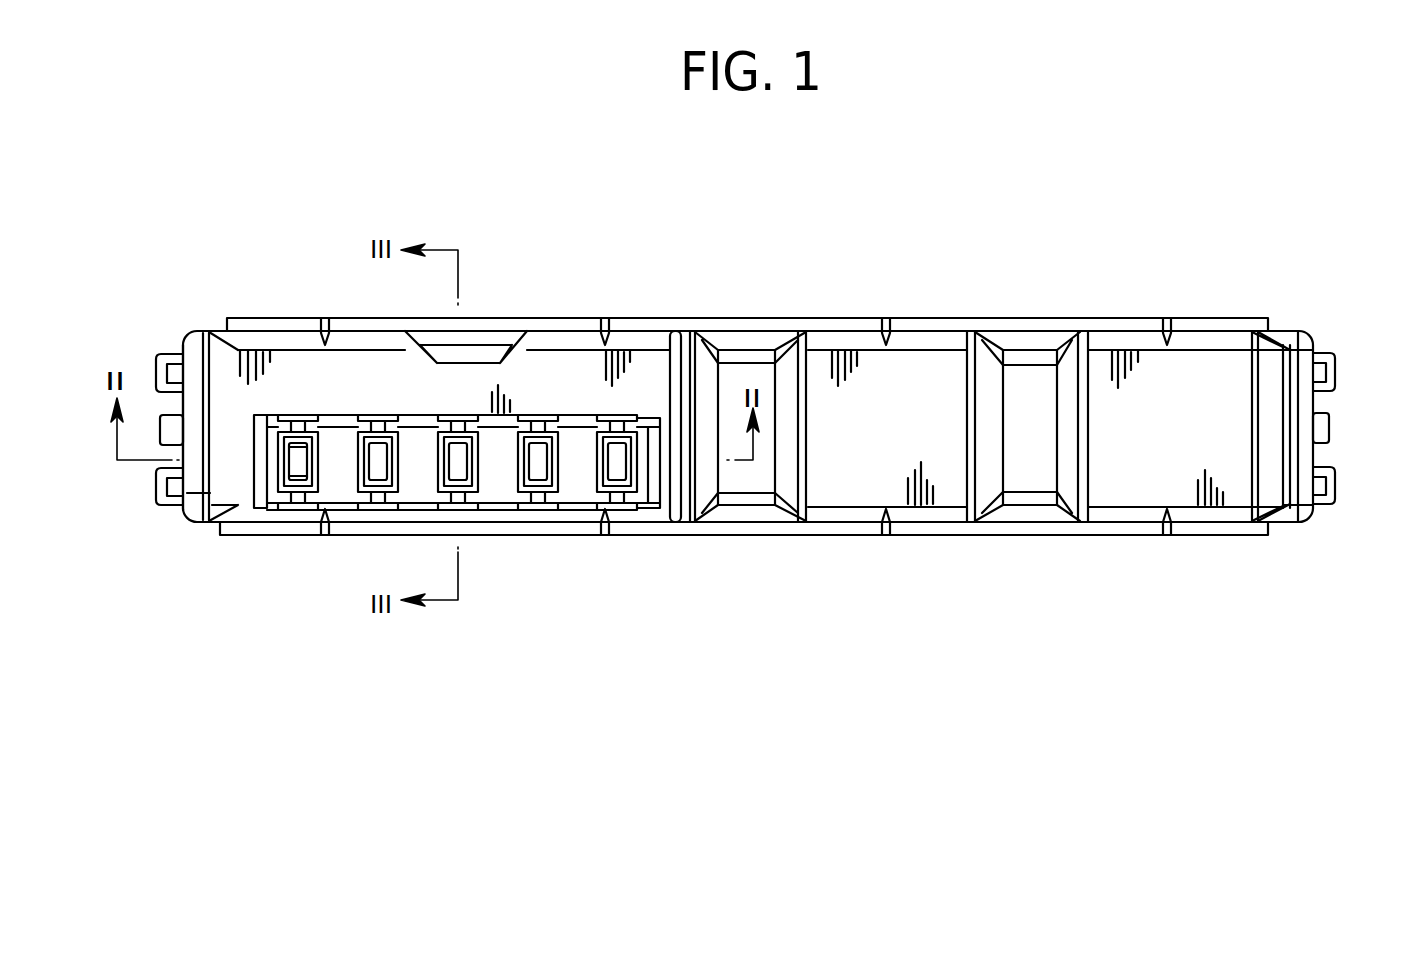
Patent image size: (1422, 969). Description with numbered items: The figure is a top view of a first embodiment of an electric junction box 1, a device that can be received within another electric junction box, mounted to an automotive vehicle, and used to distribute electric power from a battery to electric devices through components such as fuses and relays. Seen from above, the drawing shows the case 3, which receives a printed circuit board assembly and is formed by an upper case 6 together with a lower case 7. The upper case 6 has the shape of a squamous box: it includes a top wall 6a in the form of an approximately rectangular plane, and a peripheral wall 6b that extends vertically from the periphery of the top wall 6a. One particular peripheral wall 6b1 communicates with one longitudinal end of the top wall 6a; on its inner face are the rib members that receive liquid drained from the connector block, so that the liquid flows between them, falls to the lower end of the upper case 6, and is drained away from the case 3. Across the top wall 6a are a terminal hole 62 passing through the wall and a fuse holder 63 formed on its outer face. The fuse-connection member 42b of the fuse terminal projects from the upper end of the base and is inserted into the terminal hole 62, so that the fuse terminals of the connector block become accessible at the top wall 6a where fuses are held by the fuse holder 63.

The electric junction box 1 is at (1016, 260).
The case 3 is at (1218, 637).
The upper case 6 is at (1282, 531).
The top wall 6a is at (918, 507).
The peripheral wall 6b is at (925, 330).
The peripheral wall 6b1 is at (183, 400).
The lower case 7 is at (1213, 540).
The fuse-connection member 42b is at (297, 472).
The terminal hole 62 is at (298, 472).
The fuse holder 63 is at (300, 492).